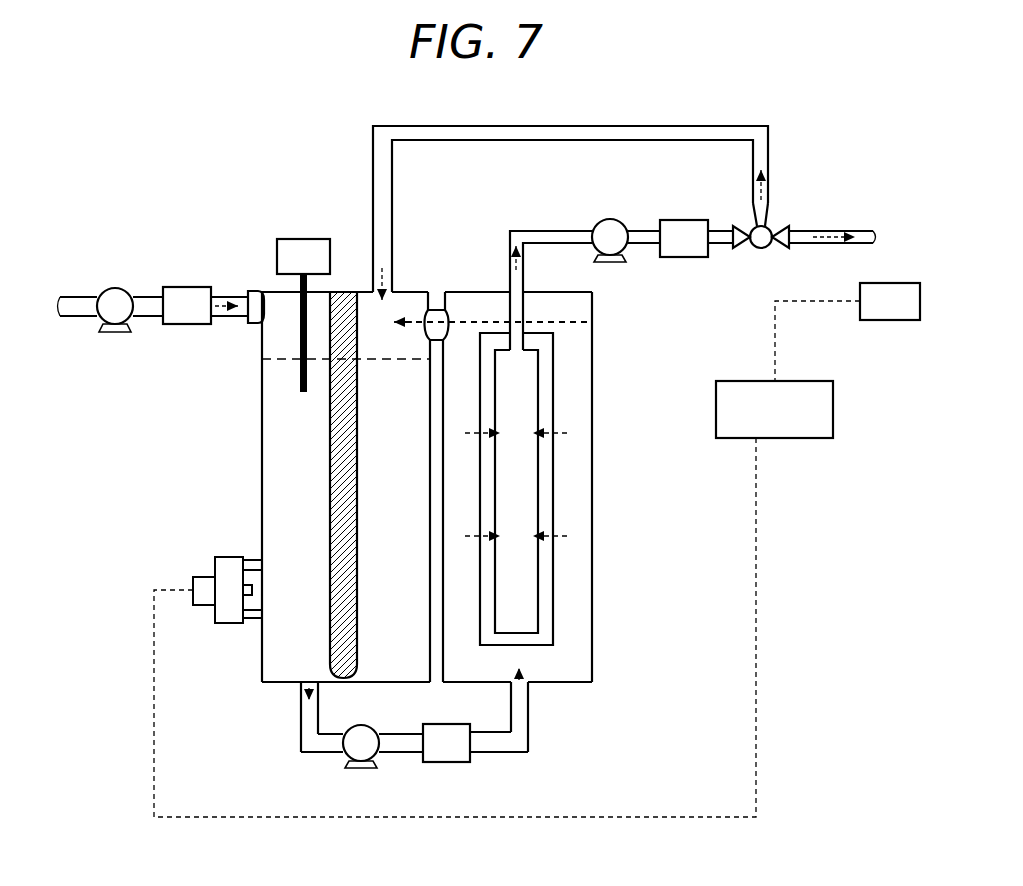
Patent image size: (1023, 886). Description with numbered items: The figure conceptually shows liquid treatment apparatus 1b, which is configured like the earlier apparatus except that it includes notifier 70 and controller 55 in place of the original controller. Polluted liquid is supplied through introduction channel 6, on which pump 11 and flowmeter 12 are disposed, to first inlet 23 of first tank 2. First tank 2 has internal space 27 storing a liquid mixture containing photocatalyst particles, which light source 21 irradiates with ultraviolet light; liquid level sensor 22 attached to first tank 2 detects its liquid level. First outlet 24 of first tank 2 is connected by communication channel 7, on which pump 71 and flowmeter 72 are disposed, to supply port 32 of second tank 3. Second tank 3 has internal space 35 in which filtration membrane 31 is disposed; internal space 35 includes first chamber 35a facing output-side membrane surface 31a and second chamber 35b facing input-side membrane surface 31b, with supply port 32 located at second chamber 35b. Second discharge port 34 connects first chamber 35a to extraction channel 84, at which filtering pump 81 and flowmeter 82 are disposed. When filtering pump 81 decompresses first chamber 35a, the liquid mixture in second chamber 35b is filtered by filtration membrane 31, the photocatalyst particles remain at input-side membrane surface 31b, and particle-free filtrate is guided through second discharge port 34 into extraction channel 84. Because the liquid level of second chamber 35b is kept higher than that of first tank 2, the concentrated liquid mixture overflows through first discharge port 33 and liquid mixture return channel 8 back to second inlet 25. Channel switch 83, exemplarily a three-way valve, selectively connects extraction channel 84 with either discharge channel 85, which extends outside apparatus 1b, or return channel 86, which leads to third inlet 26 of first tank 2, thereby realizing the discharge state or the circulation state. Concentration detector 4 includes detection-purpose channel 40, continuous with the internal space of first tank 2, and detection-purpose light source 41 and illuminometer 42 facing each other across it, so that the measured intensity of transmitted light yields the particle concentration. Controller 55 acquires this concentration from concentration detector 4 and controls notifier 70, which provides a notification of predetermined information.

The liquid treatment apparatus 1b is at (28, 128).
The first tank 2 is at (262, 388).
The second tank 3 is at (592, 664).
The concentration detector 4 is at (217, 585).
The introduction channel 6 is at (85, 300).
The communication channel 7 is at (312, 742).
The liquid mixture return channel 8 is at (441, 312).
The pump 11 is at (121, 298).
The flowmeter 12 is at (205, 287).
The light source 21 is at (330, 428).
The liquid level sensor 22 is at (320, 239).
The first inlet 23 is at (268, 300).
The first outlet 24 is at (302, 658).
The second inlet 25 is at (423, 307).
The third inlet 26 is at (392, 303).
The internal space 27 is at (302, 455).
The filtration membrane 31 is at (553, 405).
The output-side membrane surface 31a is at (532, 458).
The input-side membrane surface 31b is at (556, 483).
The supply port 32 is at (532, 663).
The first discharge port 33 is at (453, 319).
The second discharge port 34 is at (521, 315).
The internal space 35 is at (643, 513).
The first chamber 35a is at (523, 520).
The second chamber 35b is at (561, 567).
The detection-purpose channel 40 is at (229, 586).
The detection-purpose light source 41 is at (245, 608).
The illuminometer 42 is at (207, 596).
The controller 55 is at (833, 407).
The notifier 70 is at (920, 300).
The pump 71 is at (355, 746).
The flowmeter 72 is at (437, 763).
The filtering pump 81 is at (608, 233).
The flowmeter 82 is at (674, 220).
The channel switch 83 is at (750, 224).
The extraction channel 84 is at (541, 233).
The discharge channel 85 is at (812, 231).
The return channel 86 is at (570, 130).